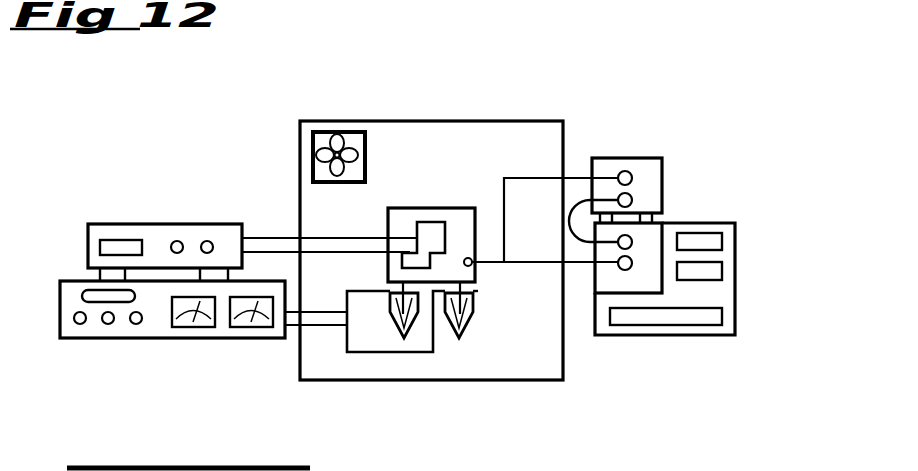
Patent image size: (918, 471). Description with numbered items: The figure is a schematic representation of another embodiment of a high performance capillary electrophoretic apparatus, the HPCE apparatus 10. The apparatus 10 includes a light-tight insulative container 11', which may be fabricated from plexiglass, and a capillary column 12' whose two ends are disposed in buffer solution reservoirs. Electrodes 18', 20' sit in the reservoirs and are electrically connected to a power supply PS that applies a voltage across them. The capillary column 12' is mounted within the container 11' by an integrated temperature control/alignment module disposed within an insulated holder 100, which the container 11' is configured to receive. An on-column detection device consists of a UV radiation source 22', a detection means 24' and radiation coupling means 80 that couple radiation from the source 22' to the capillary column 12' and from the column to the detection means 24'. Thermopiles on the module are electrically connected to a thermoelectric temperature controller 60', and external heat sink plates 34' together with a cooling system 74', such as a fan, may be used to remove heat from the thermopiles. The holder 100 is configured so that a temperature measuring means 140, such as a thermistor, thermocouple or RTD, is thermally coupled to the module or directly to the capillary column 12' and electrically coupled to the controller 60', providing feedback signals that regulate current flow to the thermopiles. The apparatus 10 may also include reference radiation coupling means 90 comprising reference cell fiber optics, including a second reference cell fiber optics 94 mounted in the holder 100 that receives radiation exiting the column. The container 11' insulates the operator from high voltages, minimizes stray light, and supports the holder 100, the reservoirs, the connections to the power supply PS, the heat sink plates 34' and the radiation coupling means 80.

The HPCE apparatus 10 is at (566, 50).
The light-tight insulative container 11' is at (461, 296).
The capillary column 12' is at (513, 307).
The electrode 18' is at (336, 336).
The electrode 20' is at (301, 374).
The UV radiation source 22' is at (659, 227).
The detection means 24' is at (695, 328).
The external heat sink plates 34' is at (506, 465).
The thermoelectric temperature controller 60' is at (165, 196).
The cooling system 74' is at (344, 123).
The radiation coupling means 80 is at (576, 154).
The reference radiation coupling means 90 is at (186, 440).
The second reference cell fiber optics 94 is at (98, 461).
The insulated holder 100 is at (453, 175).
The temperature measuring means 140 is at (462, 222).
The power supply PS is at (68, 277).